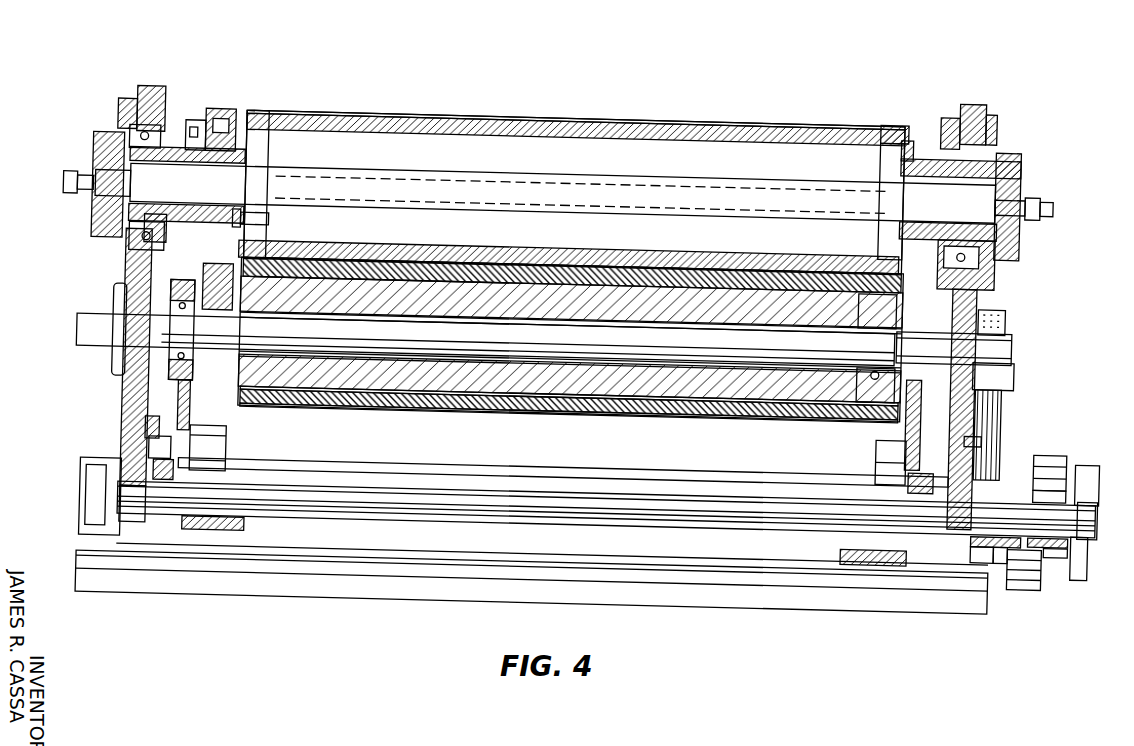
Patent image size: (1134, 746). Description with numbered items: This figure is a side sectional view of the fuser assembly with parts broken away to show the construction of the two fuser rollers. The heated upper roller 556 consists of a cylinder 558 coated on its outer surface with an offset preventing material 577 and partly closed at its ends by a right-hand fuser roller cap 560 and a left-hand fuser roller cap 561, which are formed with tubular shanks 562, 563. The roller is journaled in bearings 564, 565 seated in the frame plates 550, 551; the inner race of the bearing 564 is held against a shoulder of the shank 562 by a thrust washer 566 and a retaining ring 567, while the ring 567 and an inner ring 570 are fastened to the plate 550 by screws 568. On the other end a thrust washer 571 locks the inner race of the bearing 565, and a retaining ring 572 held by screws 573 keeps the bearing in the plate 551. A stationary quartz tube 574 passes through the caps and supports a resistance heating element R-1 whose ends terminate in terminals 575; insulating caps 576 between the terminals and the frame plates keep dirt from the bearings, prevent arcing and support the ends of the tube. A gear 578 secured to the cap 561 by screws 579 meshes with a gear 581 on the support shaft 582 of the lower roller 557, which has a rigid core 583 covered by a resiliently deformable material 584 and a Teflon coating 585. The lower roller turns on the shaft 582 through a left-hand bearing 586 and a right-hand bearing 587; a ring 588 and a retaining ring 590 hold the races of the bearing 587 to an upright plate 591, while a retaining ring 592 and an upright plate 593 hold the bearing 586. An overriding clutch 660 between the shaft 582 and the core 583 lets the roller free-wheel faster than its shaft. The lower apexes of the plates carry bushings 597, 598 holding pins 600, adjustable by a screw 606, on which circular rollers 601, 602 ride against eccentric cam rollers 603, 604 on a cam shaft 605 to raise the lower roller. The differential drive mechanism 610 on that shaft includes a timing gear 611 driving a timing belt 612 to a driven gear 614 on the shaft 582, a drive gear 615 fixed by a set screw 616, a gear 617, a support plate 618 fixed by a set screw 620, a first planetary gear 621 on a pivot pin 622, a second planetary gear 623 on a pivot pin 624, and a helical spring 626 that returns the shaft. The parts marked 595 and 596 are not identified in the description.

The frame plate 550 is at (975, 303).
The frame plate 551 is at (130, 278).
The upper roller 556 is at (350, 82).
The lower roller 557 is at (362, 443).
The cylinder 558 is at (423, 116).
The right-hand fuser roller cap 560 is at (887, 128).
The left-hand fuser roller cap 561 is at (262, 112).
The tubular shank 562 is at (925, 160).
The tubular shank 563 is at (183, 150).
The bearing 564 is at (1000, 158).
The bearing 565 is at (130, 128).
The thrust washer 566 is at (1003, 165).
The retaining ring 567 is at (1000, 125).
The screws 568 is at (983, 108).
The inner ring 570 is at (957, 120).
The thrust washer 571 is at (158, 235).
The retaining ring 572 is at (132, 100).
The screws 573 is at (160, 75).
The quartz tube 574 is at (512, 177).
The terminals 575 is at (66, 181).
The insulating caps 576 is at (92, 210).
The offset preventing material 577 is at (563, 118).
The gear 578 is at (222, 108).
The screws 579 is at (262, 219).
The gear 581 is at (272, 250).
The support shaft 582 is at (440, 362).
The rigid core 583 is at (481, 385).
The resiliently deformable material 584 is at (548, 400).
The Teflon coating 585 is at (628, 410).
The left-hand bearing 586 is at (180, 295).
The right-hand bearing 587 is at (882, 333).
The ring 588 is at (954, 349).
The retaining ring 590 is at (982, 380).
The upright plate 591 is at (907, 428).
The retaining ring 592 is at (165, 355).
The upright plate 593 is at (192, 412).
The pin 595 is at (973, 442).
The bracket 596 is at (150, 428).
The bushing 597 is at (606, 509).
The bushing 598 is at (165, 470).
The pins 600 is at (151, 515).
The circular roller 601 is at (225, 455).
The circular roller 602 is at (872, 462).
The cam roller 603 is at (235, 528).
The cam roller 604 is at (872, 552).
The cam shaft 605 is at (362, 520).
The screw 606 is at (155, 446).
The differential drive mechanism 610 is at (1097, 417).
The timing gear 611 is at (985, 568).
The timing belt 612 is at (1002, 428).
The driven gear 614 is at (1012, 328).
The drive gear 615 is at (1003, 555).
The set screw 616 is at (968, 546).
The gear 617 is at (1050, 565).
The support plate 618 is at (1058, 565).
The set screw 620 is at (1092, 517).
The first planetary gear 621 is at (1050, 458).
The pivot pin 622 is at (1085, 483).
The second planetary gear 623 is at (1020, 592).
The pivot pin 624 is at (1080, 568).
The helical spring 626 is at (88, 530).
The overriding clutch 660 is at (862, 382).
The resistance heating element R-1 is at (418, 190).